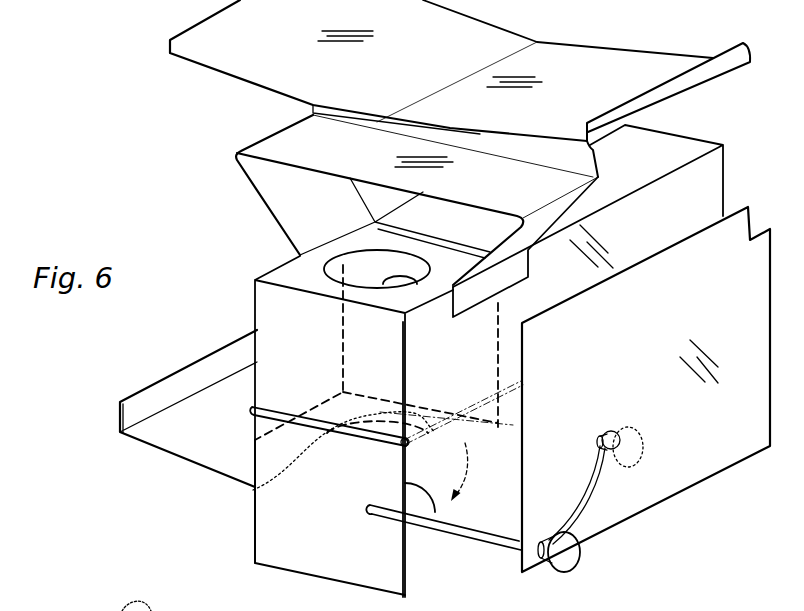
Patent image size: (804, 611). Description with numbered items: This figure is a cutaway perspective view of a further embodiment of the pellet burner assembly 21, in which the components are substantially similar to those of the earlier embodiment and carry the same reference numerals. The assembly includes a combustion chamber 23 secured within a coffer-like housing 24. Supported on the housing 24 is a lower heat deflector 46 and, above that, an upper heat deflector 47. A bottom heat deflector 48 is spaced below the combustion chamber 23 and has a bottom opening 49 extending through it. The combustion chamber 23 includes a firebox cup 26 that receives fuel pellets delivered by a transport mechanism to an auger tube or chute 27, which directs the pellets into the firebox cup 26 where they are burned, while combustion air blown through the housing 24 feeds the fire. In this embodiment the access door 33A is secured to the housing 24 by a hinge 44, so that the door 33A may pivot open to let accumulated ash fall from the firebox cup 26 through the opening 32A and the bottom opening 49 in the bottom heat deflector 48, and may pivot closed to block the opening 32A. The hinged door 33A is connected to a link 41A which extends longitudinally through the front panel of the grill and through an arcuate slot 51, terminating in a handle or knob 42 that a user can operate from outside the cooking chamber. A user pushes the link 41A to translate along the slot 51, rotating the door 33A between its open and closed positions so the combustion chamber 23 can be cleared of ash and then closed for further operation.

The pellet burner assembly 21 is at (147, 121).
The combustion chamber 23 is at (251, 273).
The housing 24 is at (440, 335).
The firebox cup 26 is at (325, 275).
The auger tube or chute 27 is at (395, 282).
The opening 32A is at (253, 490).
The access door 33A is at (313, 521).
The link 41A is at (458, 521).
The handle or knob 42 is at (573, 553).
The hinge 44 is at (280, 410).
The lower heat deflector 46 is at (323, 162).
The upper heat deflector 47 is at (582, 93).
The bottom heat deflector 48 is at (178, 428).
The bottom opening 49 is at (420, 503).
The arcuate slot 51 is at (600, 488).